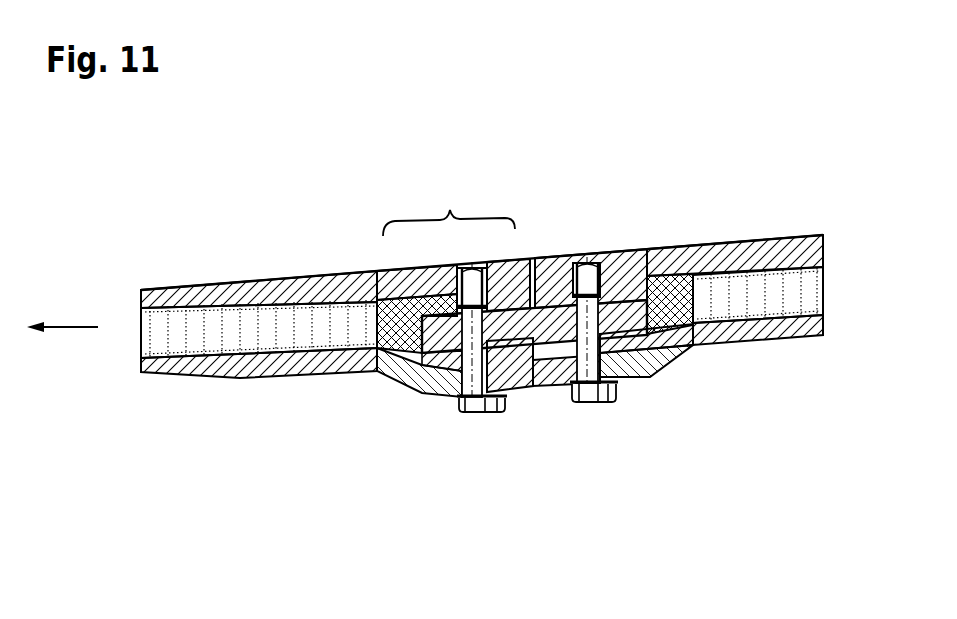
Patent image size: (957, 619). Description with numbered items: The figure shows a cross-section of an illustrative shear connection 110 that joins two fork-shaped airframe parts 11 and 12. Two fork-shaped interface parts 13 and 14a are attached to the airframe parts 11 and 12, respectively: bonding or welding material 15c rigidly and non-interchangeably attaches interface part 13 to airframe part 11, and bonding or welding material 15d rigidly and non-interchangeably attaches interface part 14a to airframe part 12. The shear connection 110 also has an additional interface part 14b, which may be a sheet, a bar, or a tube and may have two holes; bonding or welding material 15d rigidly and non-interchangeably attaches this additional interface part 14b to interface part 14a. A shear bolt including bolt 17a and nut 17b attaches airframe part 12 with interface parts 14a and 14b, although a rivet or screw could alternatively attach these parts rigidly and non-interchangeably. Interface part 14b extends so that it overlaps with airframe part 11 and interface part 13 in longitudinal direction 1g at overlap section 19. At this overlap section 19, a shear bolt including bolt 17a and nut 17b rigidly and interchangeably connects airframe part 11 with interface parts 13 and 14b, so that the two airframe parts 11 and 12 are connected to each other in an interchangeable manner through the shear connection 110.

The shear connection 110 is at (514, 152).
The airframe part 11 is at (192, 297).
The airframe part 12 is at (735, 250).
The interface part 13 is at (397, 333).
The interface part 14a is at (670, 317).
The additional interface part 14b is at (628, 326).
The bonding or welding material 15c is at (393, 304).
The bonding or welding material 15d is at (620, 268).
The bolt 17a is at (483, 400).
The nut 17b is at (488, 266).
The overlap section 19 is at (449, 206).
The longitudinal direction 1g is at (68, 329).